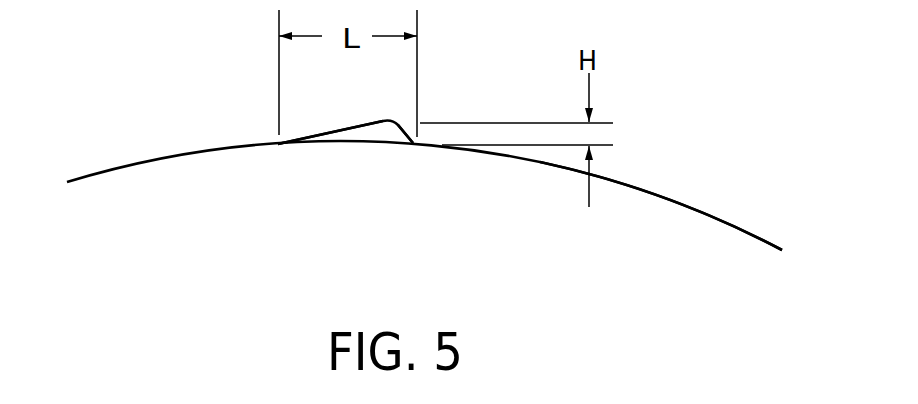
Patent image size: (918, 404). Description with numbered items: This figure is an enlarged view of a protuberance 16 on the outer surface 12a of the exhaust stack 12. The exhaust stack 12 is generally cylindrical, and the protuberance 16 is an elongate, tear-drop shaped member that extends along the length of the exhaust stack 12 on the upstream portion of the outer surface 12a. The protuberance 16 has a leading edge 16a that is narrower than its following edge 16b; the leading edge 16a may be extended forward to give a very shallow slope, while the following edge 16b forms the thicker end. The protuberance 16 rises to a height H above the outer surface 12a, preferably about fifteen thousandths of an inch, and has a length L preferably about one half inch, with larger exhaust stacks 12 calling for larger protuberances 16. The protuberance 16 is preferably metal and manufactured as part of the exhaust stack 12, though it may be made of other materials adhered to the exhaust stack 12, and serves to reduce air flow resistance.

The exhaust stack 12 is at (742, 228).
The outer surface 12a is at (673, 202).
The protuberance 16 is at (385, 135).
The leading edge 16a is at (299, 137).
The following edge 16b is at (418, 128).